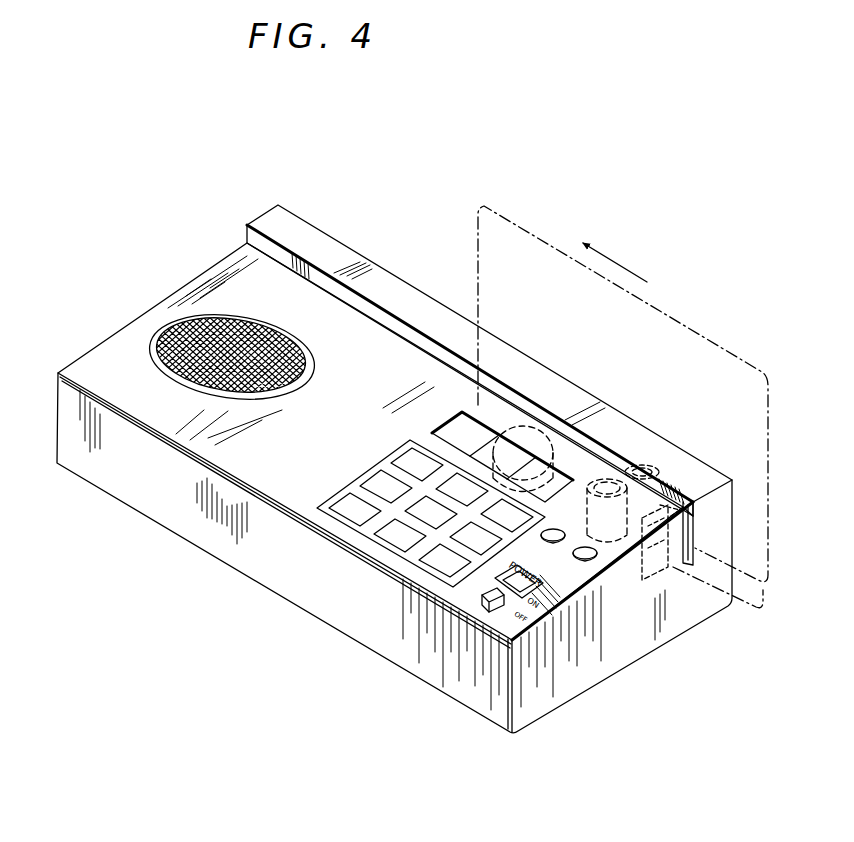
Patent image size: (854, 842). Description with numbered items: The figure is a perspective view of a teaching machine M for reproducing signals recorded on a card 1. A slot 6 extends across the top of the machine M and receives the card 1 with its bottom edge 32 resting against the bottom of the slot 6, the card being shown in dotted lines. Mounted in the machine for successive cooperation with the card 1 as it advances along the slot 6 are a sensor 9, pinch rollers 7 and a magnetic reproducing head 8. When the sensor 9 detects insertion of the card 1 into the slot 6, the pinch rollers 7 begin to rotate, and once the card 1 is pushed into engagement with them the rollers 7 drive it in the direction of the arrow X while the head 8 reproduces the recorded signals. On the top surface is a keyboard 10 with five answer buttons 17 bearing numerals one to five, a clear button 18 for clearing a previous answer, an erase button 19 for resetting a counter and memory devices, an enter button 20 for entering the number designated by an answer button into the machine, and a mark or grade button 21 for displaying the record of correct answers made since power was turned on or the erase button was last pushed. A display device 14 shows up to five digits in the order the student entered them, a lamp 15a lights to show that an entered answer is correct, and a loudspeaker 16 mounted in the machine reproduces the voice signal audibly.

The machine M is at (91, 339).
The card 1 is at (707, 341).
The slot 6 is at (239, 236).
The pinch rollers 7 is at (660, 474).
The magnetic reproducing head 8 is at (538, 426).
The sensor 9 is at (667, 563).
The keyboard 10 is at (417, 547).
The display device 14 is at (436, 425).
The lamp 15a is at (556, 529).
The loudspeaker 16 is at (191, 392).
The answer buttons 17 is at (391, 452).
The clear button 18 is at (481, 553).
The erase button 19 is at (362, 526).
The enter button 20 is at (403, 548).
The grade button 21 is at (425, 564).
The bottom edge 32 is at (694, 568).